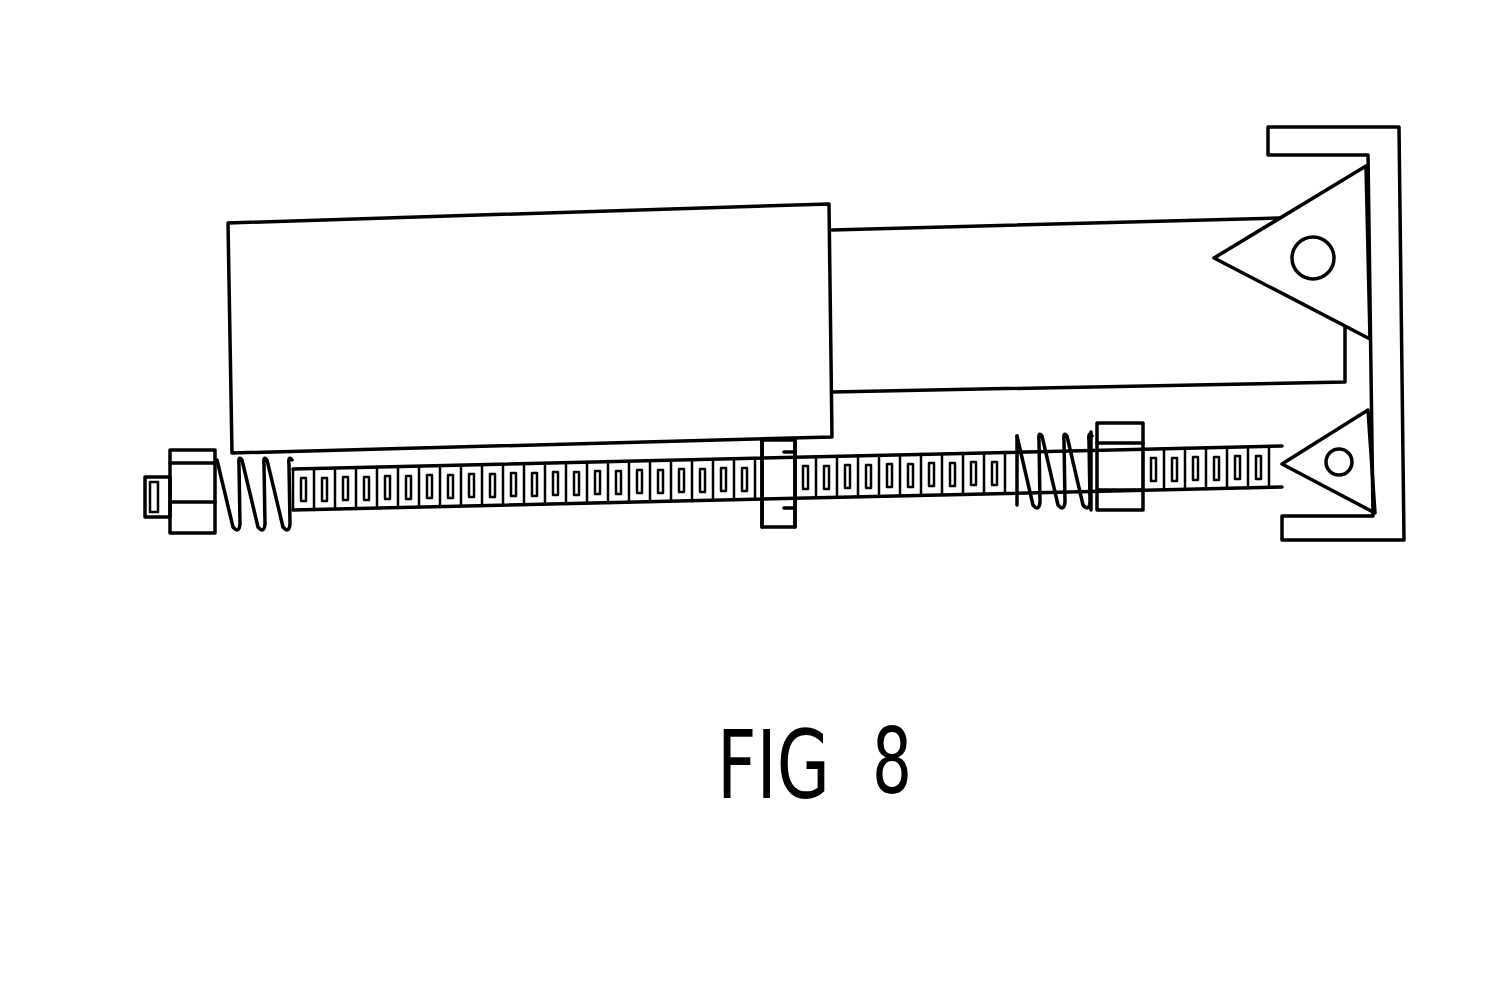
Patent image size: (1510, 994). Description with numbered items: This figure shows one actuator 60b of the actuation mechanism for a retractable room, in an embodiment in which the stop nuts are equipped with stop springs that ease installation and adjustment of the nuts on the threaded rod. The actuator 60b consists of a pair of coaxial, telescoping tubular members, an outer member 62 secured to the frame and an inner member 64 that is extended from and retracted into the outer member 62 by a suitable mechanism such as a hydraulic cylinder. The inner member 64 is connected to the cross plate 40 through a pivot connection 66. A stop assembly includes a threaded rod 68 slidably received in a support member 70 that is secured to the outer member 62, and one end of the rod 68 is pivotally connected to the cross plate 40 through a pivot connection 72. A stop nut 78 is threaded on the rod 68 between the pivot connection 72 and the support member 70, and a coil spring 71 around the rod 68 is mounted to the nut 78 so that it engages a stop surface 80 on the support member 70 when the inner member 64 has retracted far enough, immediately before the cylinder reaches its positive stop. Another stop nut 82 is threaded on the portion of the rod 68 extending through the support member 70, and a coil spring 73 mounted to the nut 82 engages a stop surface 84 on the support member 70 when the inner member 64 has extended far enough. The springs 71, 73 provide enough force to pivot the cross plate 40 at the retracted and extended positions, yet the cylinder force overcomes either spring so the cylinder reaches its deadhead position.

The cross plate 40 is at (1388, 388).
The actuator 60b is at (742, 178).
The outer member 62 is at (525, 268).
The inner member 64 is at (905, 227).
The pivot connection 66 is at (1313, 258).
The threaded rod 68 is at (508, 500).
The support member 70 is at (775, 527).
The coil spring 71 is at (1020, 500).
The pivot connection 72 is at (1340, 472).
The coil spring 73 is at (285, 513).
The stop nut 78 is at (1113, 467).
The stop surface 80 is at (795, 513).
The stop nut 82 is at (187, 535).
The stop surface 84 is at (763, 518).